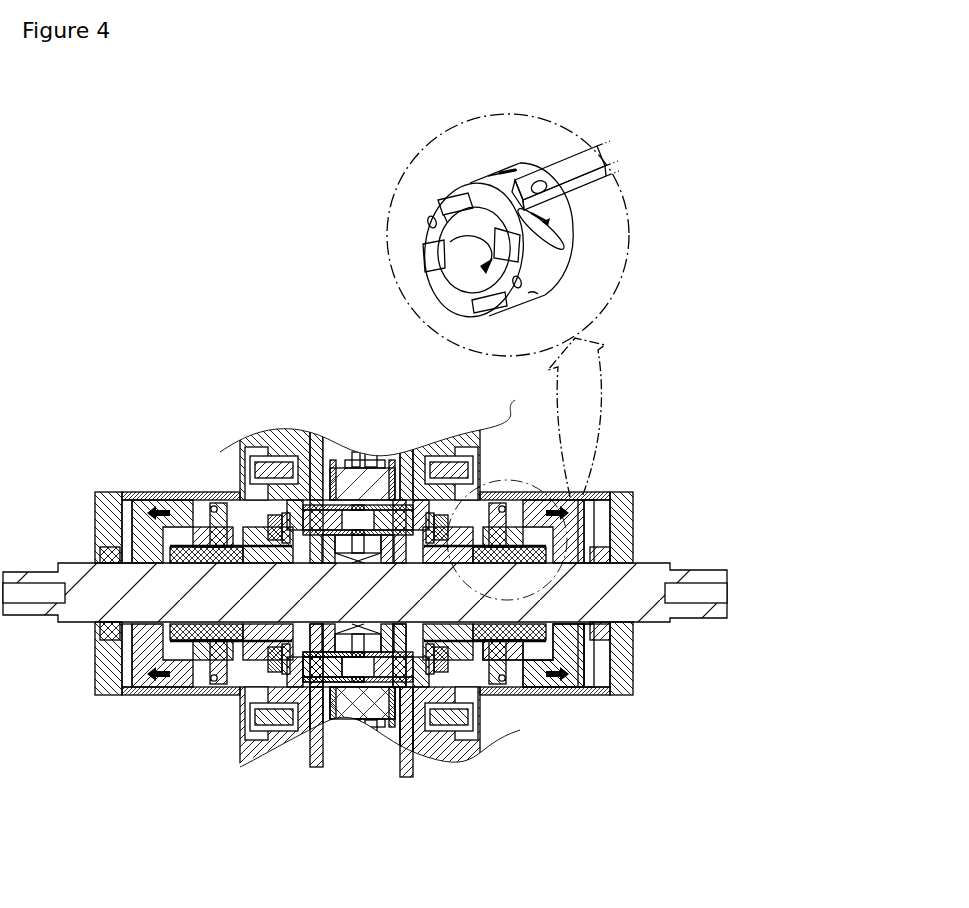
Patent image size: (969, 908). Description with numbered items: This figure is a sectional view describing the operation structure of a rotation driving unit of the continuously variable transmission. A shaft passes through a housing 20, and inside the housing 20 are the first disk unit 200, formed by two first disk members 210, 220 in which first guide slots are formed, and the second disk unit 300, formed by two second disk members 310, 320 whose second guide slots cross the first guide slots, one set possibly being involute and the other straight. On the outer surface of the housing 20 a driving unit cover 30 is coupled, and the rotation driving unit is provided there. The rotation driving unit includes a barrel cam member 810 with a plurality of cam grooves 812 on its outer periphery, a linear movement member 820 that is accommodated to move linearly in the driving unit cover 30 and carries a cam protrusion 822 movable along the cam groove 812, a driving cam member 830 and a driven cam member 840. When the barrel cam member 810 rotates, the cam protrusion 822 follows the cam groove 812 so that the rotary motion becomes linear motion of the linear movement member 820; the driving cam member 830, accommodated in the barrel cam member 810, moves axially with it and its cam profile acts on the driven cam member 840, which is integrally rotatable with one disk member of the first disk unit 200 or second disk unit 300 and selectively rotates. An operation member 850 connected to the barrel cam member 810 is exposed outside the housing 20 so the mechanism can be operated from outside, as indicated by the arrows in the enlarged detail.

The housing 20 is at (447, 742).
The driving unit cover 30 is at (597, 690).
The first disk unit 200 is at (380, 758).
The first disk member 210 is at (413, 703).
The first disk member 220 is at (397, 690).
The second disk unit 300 is at (327, 748).
The second disk member 310 is at (312, 703).
The second disk member 320 is at (332, 693).
The barrel cam member 810 is at (547, 667).
The cam groove 812 is at (557, 222).
The linear movement member 820 is at (565, 670).
The cam protrusion 822 is at (507, 640).
The driving cam member 830 is at (525, 660).
The driven cam member 840 is at (507, 677).
The operation member 850 is at (490, 690).